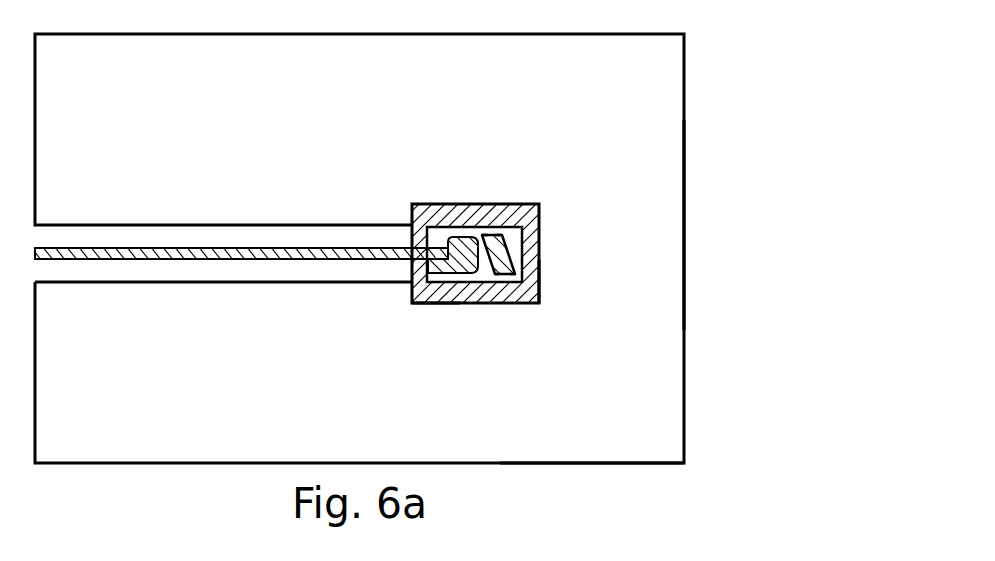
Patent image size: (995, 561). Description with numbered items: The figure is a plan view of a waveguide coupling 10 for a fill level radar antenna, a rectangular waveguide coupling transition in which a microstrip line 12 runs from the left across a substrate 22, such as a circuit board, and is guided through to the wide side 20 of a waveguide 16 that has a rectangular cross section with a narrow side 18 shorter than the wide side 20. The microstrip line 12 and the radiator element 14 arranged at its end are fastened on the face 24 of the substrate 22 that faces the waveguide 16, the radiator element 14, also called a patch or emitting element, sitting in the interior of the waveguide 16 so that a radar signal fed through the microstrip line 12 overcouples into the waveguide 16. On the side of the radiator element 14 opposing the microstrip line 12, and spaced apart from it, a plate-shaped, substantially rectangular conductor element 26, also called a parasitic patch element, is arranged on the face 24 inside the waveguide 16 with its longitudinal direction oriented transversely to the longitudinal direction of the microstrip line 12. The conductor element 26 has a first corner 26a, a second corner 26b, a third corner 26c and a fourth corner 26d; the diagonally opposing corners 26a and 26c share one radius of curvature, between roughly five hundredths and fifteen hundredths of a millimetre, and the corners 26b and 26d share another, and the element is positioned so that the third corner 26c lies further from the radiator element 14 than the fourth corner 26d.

The waveguide coupling 10 is at (706, 147).
The microstrip line 12 is at (220, 249).
The radiator element 14 is at (448, 226).
The waveguide 16 is at (522, 190).
The narrow side 18 is at (541, 286).
The wide side 20 is at (433, 304).
The substrate 22 is at (688, 212).
The face 24 is at (653, 273).
The conductor element 26 is at (512, 258).
The first corner 26a is at (509, 227).
The second corner 26b is at (514, 284).
The third corner 26c is at (494, 286).
The fourth corner 26d is at (481, 226).